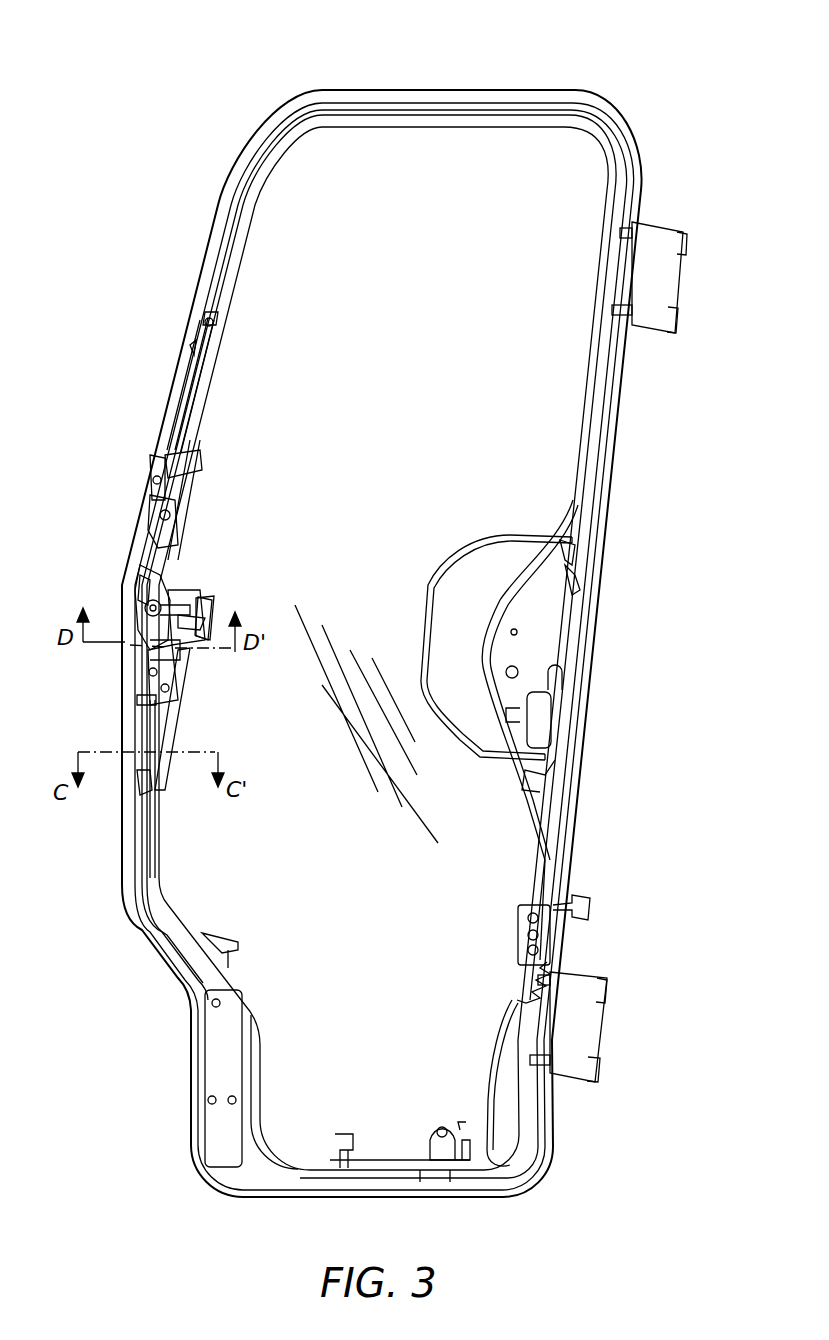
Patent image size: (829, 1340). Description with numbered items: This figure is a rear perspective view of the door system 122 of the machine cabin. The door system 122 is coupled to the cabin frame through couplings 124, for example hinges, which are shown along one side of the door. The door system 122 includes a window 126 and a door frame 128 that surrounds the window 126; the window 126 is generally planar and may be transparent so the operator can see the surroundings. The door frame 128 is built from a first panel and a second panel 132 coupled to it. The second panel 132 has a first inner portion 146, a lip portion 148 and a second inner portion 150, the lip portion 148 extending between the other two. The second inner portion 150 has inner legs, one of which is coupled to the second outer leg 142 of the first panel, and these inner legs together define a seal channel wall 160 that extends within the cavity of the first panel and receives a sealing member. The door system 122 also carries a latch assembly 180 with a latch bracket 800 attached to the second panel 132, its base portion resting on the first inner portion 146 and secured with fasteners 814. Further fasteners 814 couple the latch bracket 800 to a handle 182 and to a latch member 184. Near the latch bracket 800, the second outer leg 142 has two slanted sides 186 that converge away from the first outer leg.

The door system 122 is at (165, 58).
The couplings 124 is at (650, 278).
The window 126 is at (386, 520).
The door frame 128 is at (618, 483).
The second panel 132 is at (450, 138).
The second outer leg 142 is at (595, 632).
The first inner portion 146 is at (248, 213).
The lip portion 148 is at (150, 870).
The second inner portion 150 is at (130, 897).
The seal channel wall 160 is at (135, 825).
The latch assembly 180 is at (216, 588).
The handle 182 is at (190, 415).
The latch member 184 is at (212, 616).
The slanted sides 186 is at (150, 490).
The latch bracket 800 is at (142, 567).
The fasteners 814 is at (150, 520).